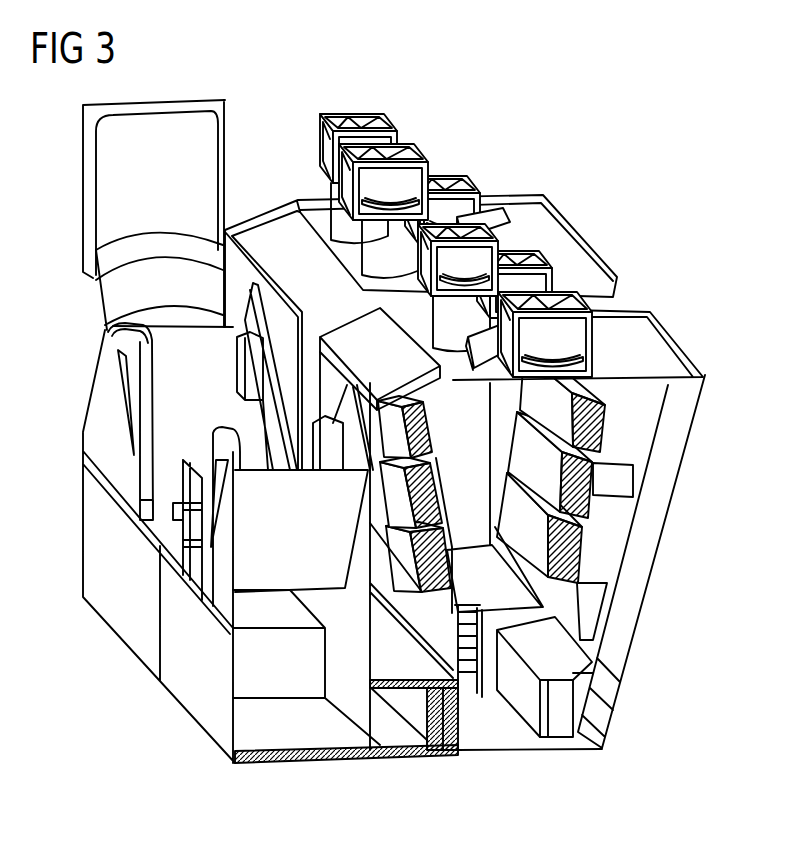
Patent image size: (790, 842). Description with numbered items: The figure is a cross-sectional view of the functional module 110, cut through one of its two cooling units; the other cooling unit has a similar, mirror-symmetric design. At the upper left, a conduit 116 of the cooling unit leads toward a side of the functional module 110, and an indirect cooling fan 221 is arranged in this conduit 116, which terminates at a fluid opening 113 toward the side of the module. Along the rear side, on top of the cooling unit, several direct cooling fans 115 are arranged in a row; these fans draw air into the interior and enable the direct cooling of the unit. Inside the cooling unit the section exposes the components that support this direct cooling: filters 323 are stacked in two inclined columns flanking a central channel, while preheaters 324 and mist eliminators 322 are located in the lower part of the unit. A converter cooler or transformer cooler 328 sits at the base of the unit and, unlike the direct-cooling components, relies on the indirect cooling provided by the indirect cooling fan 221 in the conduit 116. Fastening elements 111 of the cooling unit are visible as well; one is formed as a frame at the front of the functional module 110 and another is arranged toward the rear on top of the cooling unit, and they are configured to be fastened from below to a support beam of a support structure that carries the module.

The functional module 110 is at (659, 216).
The fastening element 111 is at (107, 337).
The fluid opening 113 is at (608, 695).
The direct cooling fan 115 is at (390, 122).
The conduit 116 is at (205, 160).
The indirect cooling fan 221 is at (105, 300).
The mist eliminator 322 is at (438, 753).
The filter 323 is at (420, 437).
The preheater 324 is at (548, 718).
The converter cooler or transformer cooler 328 is at (298, 738).